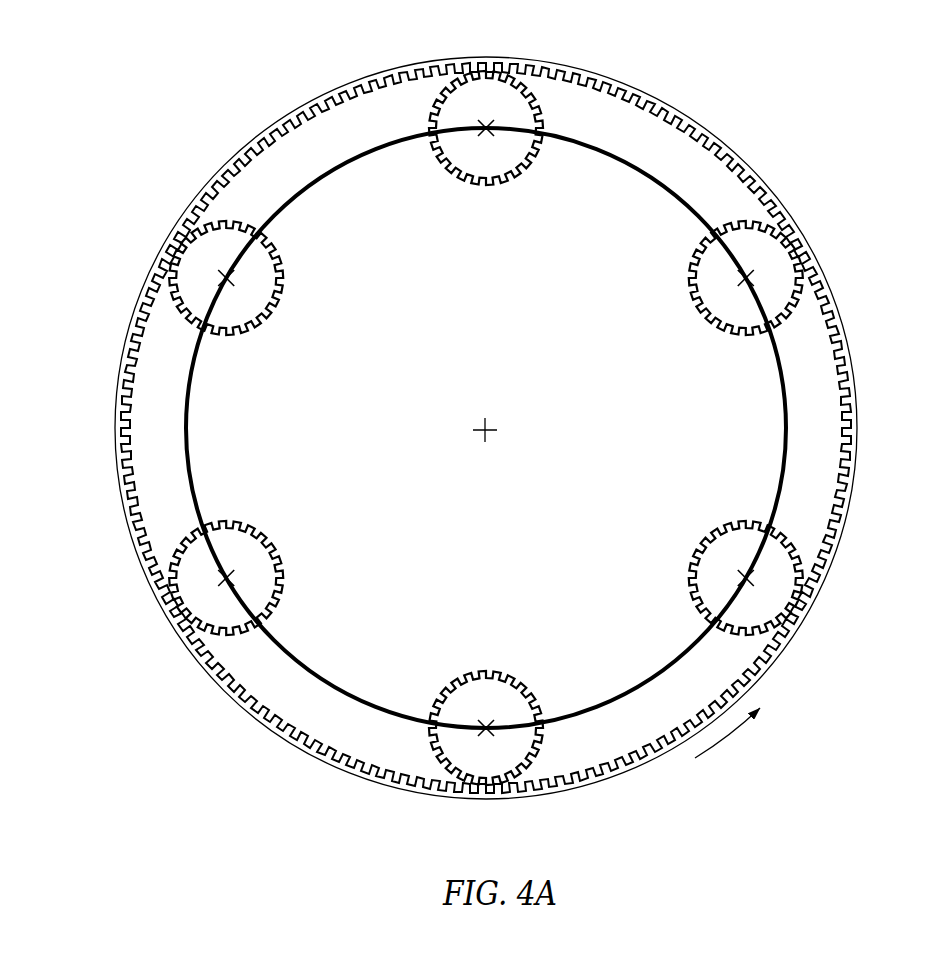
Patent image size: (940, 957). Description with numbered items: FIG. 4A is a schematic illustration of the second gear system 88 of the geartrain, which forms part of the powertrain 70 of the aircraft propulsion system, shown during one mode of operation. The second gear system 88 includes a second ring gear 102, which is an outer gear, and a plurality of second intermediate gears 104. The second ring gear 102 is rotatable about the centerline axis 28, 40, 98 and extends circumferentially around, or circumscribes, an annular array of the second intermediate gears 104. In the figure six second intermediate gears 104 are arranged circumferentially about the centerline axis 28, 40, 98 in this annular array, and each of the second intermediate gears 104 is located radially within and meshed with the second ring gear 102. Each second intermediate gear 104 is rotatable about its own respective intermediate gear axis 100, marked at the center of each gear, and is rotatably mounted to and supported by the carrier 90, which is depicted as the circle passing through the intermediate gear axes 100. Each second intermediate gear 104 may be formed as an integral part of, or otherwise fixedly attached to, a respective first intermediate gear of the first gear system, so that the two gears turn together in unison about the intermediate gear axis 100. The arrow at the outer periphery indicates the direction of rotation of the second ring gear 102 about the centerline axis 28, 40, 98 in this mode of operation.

The powertrain 70 is at (506, 434).
The second gear system 88 is at (506, 434).
The gear carrier 90 is at (792, 430).
The second ring gear 102 is at (713, 126).
The second intermediate gear 104 is at (534, 82).
The intermediate gear axis 100 is at (488, 133).
The centerline axis 28 is at (499, 465).
The centerline axis 40 is at (499, 465).
The centerline axis 98 is at (488, 433).